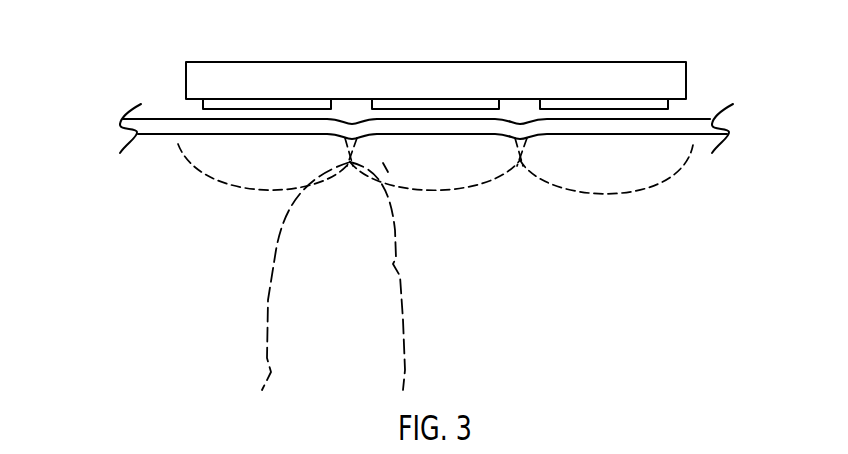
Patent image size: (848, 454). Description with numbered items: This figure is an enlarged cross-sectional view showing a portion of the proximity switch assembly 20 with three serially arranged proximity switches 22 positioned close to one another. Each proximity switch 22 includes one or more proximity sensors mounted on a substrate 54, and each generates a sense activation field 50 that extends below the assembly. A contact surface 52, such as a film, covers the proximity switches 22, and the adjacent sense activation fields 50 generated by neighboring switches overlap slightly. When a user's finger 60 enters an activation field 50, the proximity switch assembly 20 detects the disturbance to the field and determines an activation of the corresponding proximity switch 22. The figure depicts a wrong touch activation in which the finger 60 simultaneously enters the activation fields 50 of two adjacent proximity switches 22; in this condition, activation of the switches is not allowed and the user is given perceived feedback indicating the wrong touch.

The proximity switch assembly 20 is at (133, 61).
The proximity switch 22 is at (245, 103).
The sense activation field 50 is at (222, 185).
The contact surface 52 is at (692, 122).
The substrate 54 is at (650, 61).
The user's finger 60 is at (267, 301).